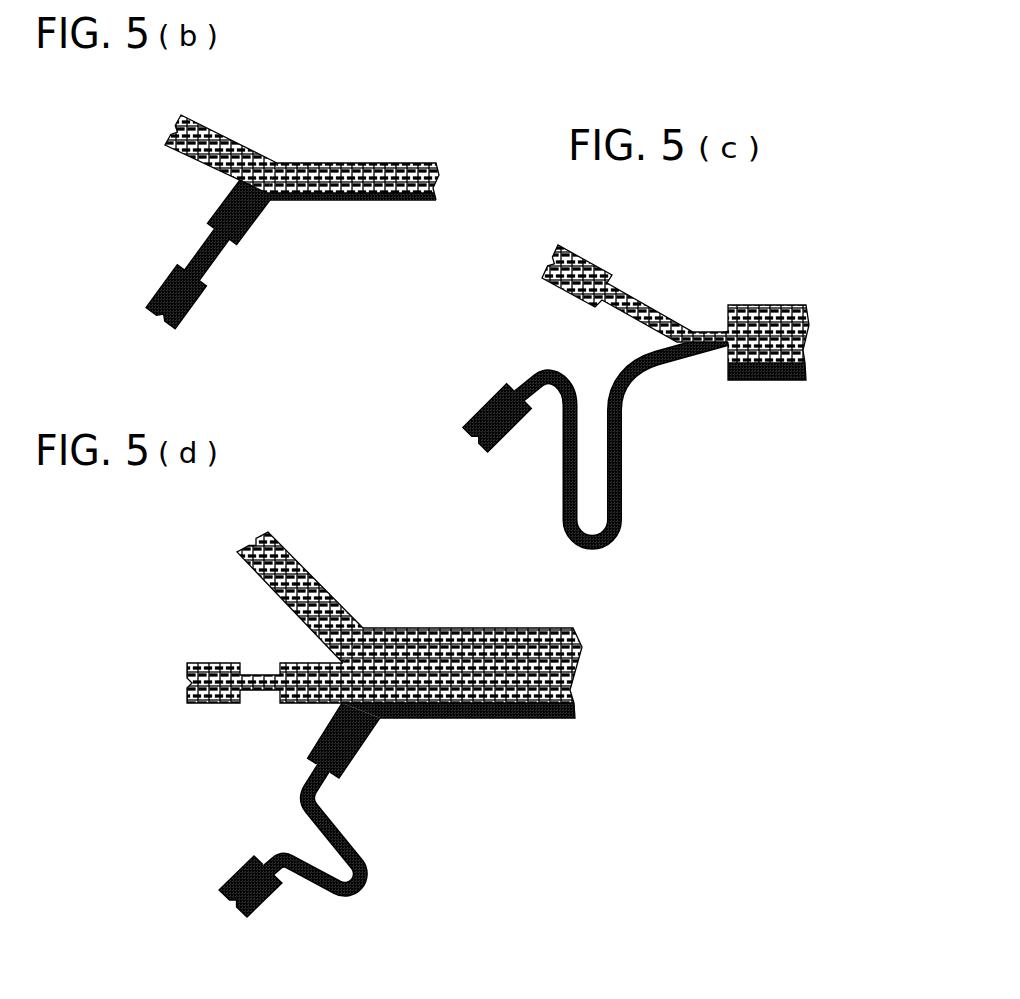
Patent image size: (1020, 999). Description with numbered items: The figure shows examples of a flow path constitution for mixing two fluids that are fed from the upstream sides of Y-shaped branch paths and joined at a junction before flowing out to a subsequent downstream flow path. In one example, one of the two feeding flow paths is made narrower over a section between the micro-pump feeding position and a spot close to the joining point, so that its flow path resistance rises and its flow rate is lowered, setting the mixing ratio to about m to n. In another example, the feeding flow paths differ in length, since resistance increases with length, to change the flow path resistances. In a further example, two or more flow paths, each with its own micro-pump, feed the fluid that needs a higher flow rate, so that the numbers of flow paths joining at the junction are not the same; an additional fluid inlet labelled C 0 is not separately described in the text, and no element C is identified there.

The fluid C inlet C is at (234, 904).